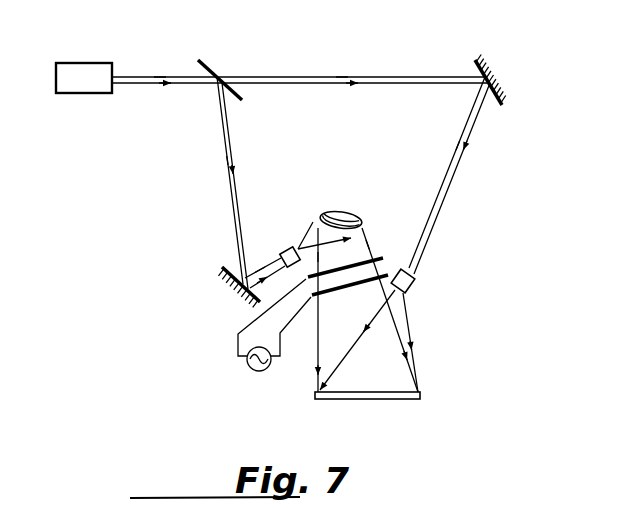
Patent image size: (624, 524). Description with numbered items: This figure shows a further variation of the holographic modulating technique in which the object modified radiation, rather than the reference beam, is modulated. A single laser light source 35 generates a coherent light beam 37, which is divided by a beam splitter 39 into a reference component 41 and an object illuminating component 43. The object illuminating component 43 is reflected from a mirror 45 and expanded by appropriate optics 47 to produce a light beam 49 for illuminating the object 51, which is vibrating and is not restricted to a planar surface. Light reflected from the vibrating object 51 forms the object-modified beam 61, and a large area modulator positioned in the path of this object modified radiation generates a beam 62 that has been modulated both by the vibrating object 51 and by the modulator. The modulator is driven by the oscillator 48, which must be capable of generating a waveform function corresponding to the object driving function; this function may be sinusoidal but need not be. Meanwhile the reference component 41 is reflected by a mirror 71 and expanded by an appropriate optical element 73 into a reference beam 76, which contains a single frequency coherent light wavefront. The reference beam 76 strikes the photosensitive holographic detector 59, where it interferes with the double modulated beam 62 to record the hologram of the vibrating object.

The laser light source 35 is at (68, 70).
The coherent light beam 37 is at (133, 77).
The beam splitter 39 is at (207, 63).
The reference component 41 is at (275, 80).
The object illuminating component 43 is at (222, 142).
The mirror 45 is at (231, 268).
The optics 47 is at (286, 247).
The oscillator 48 is at (253, 372).
The light beam 49 is at (300, 240).
The object 51 is at (346, 212).
The photosensitive detector 59 is at (392, 400).
The object-modified beam 61 is at (362, 233).
The double modulated beam 62 is at (327, 347).
The mirror 71 is at (502, 93).
The optical element 73 is at (415, 283).
The reference beam 76 is at (406, 321).